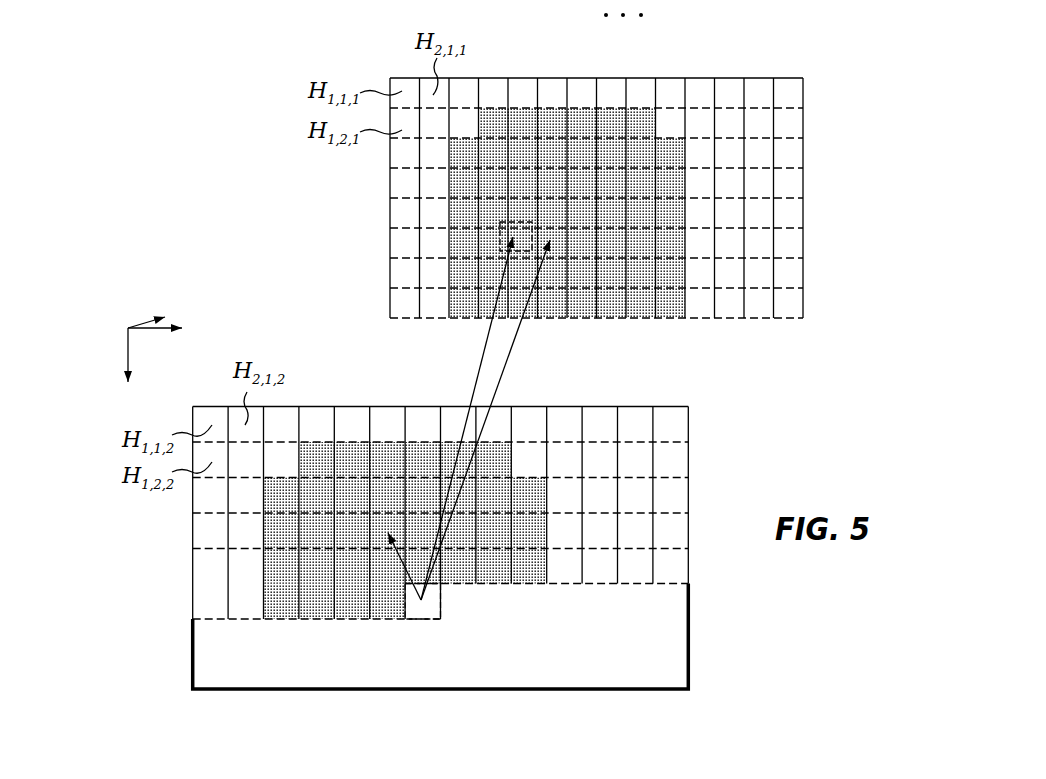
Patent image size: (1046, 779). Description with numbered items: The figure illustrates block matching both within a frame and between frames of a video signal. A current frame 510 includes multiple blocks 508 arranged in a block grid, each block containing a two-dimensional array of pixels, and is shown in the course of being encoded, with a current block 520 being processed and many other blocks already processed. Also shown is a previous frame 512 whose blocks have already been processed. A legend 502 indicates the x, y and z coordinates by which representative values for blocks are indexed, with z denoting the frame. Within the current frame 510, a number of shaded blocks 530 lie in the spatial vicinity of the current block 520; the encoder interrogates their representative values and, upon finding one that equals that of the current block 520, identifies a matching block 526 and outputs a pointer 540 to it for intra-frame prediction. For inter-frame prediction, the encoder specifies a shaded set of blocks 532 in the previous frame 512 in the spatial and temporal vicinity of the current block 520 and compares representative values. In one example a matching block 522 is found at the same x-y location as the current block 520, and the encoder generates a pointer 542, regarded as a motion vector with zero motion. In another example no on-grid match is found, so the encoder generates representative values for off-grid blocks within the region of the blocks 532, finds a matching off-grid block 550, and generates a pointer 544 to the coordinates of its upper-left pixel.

The legend 502 is at (103, 311).
The blocks 508 is at (603, 623).
The current frame 510 is at (473, 548).
The previous frame 512 is at (598, 230).
The current block 520 is at (440, 594).
The matching block 522 is at (567, 240).
The matching block 526 is at (378, 525).
The blocks 530 is at (324, 625).
The set of blocks 532 is at (675, 327).
The pointer 540 is at (415, 587).
The pointer 542 is at (509, 357).
The pointer 544 is at (476, 381).
The matching off-grid block 550 is at (500, 235).